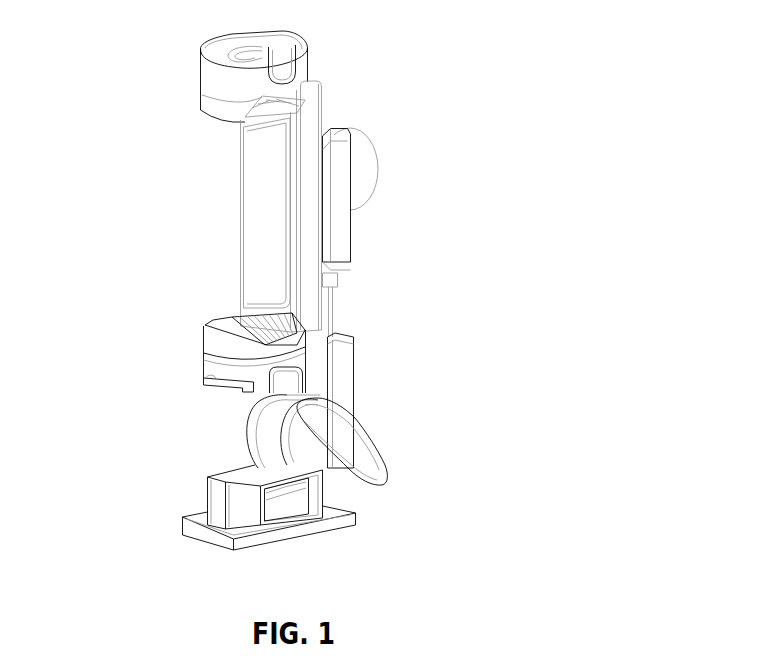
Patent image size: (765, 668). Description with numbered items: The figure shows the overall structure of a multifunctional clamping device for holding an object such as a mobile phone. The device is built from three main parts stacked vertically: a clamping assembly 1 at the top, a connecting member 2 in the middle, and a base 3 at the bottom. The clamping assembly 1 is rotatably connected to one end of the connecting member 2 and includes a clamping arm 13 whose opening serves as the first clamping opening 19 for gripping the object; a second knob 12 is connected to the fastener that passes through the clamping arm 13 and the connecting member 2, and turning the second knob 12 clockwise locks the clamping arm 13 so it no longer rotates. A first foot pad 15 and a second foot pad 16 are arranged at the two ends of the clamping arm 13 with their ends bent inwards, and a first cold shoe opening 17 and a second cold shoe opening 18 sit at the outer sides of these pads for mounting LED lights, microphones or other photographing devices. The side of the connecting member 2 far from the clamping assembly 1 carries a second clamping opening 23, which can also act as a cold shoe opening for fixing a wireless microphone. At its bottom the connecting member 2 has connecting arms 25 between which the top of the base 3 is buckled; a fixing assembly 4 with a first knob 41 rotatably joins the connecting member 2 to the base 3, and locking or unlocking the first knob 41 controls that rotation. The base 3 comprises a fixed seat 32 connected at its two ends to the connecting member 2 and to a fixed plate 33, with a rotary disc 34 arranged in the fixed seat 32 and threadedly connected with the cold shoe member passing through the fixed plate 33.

The clamping assembly 1 is at (320, 85).
The connecting member 2 is at (342, 232).
The base 3 is at (274, 485).
The fixing assembly 4 is at (365, 423).
The second knob 12 is at (355, 180).
The clamping arm 13 is at (312, 143).
The first foot pad 15 is at (235, 107).
The second foot pad 16 is at (228, 343).
The first cold shoe opening 17 is at (283, 47).
The second cold shoe opening 18 is at (227, 375).
The first clamping opening 19 is at (251, 208).
The second clamping opening 23 is at (338, 298).
The connecting arm 25 is at (253, 445).
The fixed seat 32 is at (272, 422).
The fixed plate 33 is at (303, 530).
The rotary disc 34 is at (292, 498).
The first knob 41 is at (352, 452).